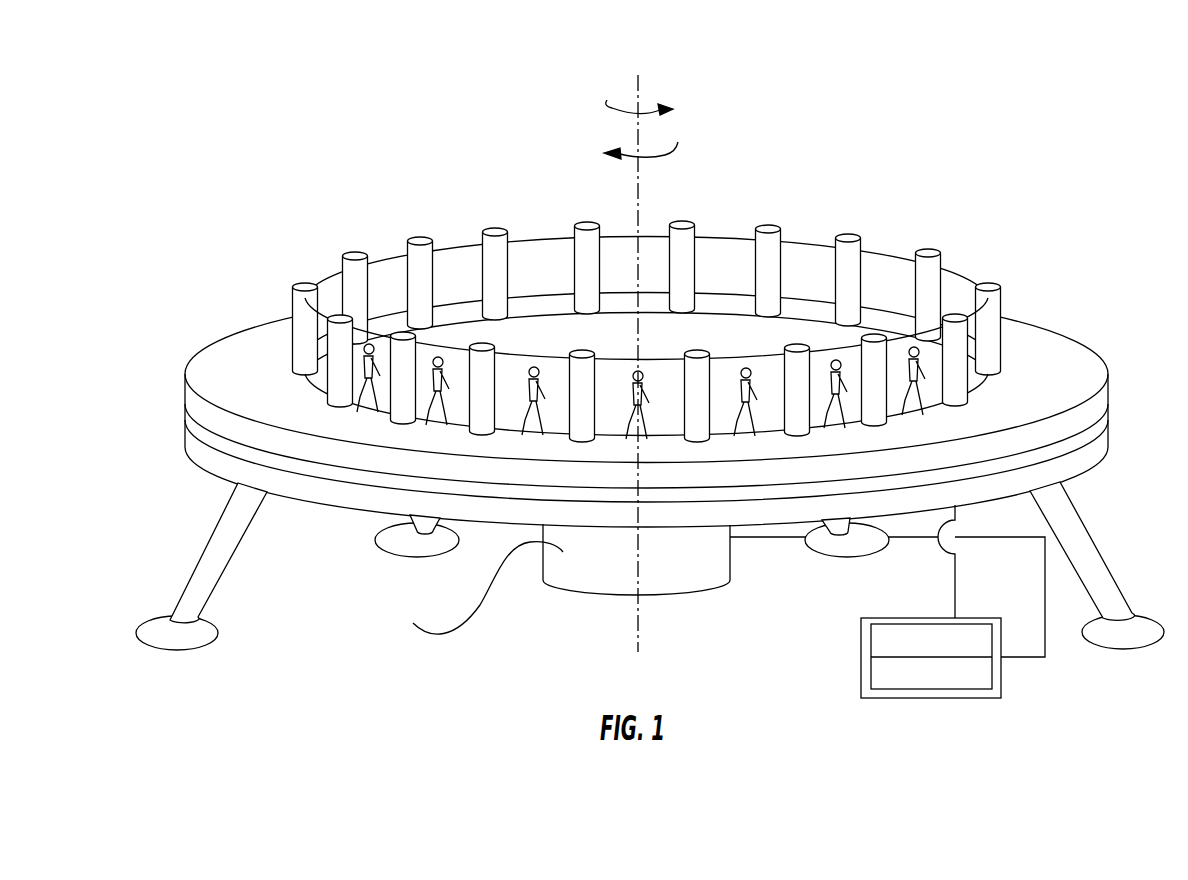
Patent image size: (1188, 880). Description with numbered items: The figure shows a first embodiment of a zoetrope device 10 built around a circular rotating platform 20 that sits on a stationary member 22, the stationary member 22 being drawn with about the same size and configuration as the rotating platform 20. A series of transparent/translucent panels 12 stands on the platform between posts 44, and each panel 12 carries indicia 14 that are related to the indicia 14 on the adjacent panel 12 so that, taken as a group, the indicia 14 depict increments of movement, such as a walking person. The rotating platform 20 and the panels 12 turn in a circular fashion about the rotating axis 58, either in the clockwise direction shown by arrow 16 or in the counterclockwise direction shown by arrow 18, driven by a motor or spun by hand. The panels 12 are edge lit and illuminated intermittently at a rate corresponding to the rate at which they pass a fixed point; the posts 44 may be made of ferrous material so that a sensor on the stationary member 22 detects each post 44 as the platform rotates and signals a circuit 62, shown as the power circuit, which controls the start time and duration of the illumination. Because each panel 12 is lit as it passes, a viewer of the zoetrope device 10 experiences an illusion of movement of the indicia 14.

The zoetrope device 10 is at (190, 237).
The transparent/translucent panel 12 is at (457, 270).
The indicia 14 is at (523, 373).
The clockwise direction 16 is at (672, 145).
The counter-clockwise direction 18 is at (627, 111).
The rotating platform 20 is at (165, 372).
The stationary member 22 is at (165, 417).
The post 44 is at (928, 278).
The rotating axis 58 is at (638, 214).
The circuit 62 is at (995, 685).